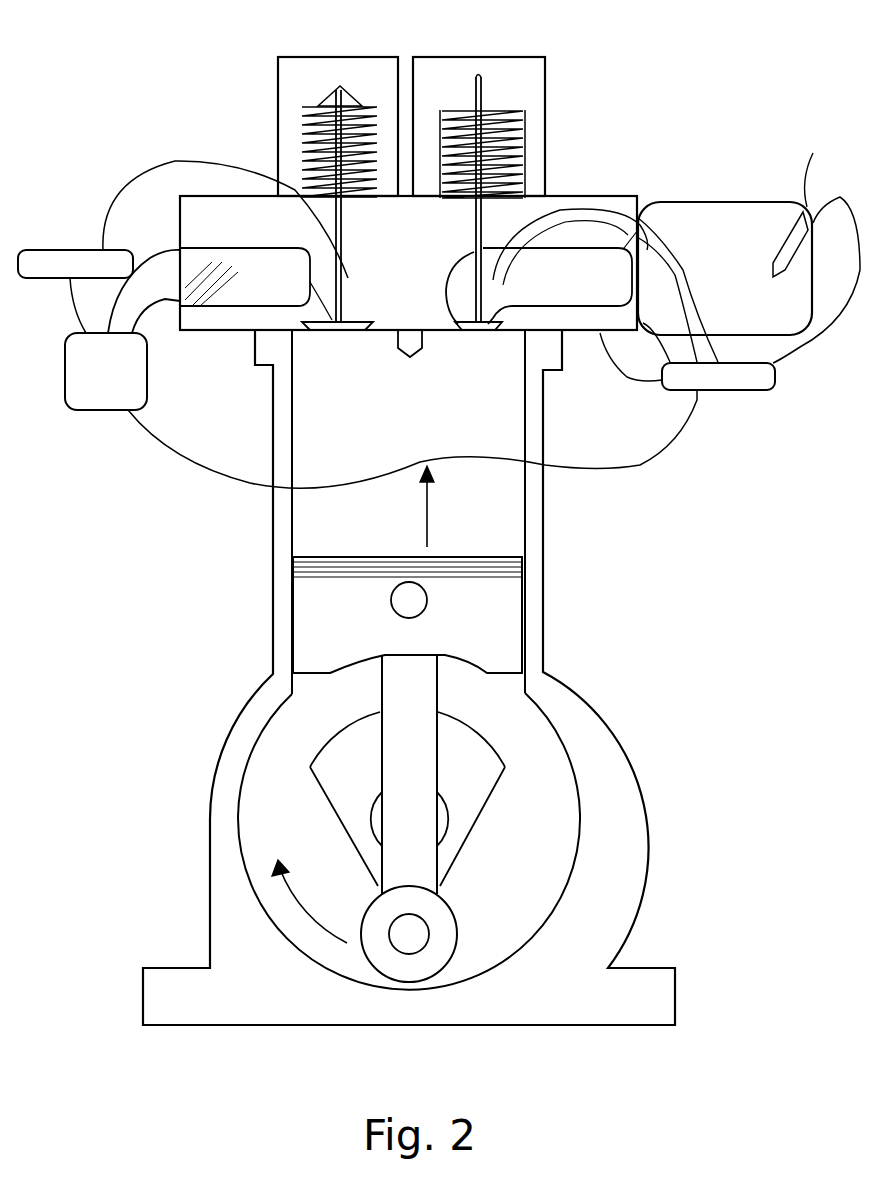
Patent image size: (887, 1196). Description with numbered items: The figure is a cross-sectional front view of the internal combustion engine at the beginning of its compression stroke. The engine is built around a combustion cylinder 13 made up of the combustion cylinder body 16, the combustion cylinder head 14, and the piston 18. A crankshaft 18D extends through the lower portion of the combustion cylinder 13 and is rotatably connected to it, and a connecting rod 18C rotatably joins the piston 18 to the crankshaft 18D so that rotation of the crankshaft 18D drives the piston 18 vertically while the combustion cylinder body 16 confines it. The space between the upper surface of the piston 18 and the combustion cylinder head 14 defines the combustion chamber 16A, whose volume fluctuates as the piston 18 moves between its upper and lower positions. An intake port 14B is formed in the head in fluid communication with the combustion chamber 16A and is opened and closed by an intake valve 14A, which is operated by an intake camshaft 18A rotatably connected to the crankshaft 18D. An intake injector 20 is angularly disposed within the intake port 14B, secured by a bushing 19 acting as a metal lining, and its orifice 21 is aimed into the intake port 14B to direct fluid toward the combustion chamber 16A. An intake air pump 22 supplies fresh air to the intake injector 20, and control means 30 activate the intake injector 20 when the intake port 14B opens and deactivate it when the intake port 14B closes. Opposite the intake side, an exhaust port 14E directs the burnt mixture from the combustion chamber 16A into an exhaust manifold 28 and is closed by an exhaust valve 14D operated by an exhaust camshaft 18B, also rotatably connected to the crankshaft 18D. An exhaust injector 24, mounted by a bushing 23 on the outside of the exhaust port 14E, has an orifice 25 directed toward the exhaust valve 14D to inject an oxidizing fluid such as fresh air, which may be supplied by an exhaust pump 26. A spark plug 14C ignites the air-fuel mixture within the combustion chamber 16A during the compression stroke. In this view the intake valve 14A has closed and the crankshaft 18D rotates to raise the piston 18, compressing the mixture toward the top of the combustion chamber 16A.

The combustion cylinder 13 is at (252, 582).
The combustion cylinder head 14 is at (412, 284).
The intake valve 14A is at (333, 330).
The intake port 14B is at (265, 291).
The spark plug 14C is at (403, 330).
The exhaust valve 14D is at (482, 333).
The exhaust port 14E is at (592, 294).
The combustion cylinder body 16 is at (535, 526).
The combustion chamber 16A is at (372, 434).
The piston 18 is at (335, 629).
The intake camshaft 18A is at (280, 62).
The exhaust camshaft 18B is at (547, 70).
The connecting rod 18C is at (411, 676).
The crankshaft 18D is at (442, 822).
The bushing 19 is at (178, 247).
The intake injector 20 is at (182, 250).
The orifice 21 is at (205, 262).
The intake air pump 22 is at (28, 250).
The bushing 23 is at (640, 250).
The exhaust injector 24 is at (676, 255).
The orifice 25 is at (501, 288).
The exhaust pump 26 is at (778, 380).
The exhaust manifold 28 is at (740, 288).
The control means 30 is at (120, 384).